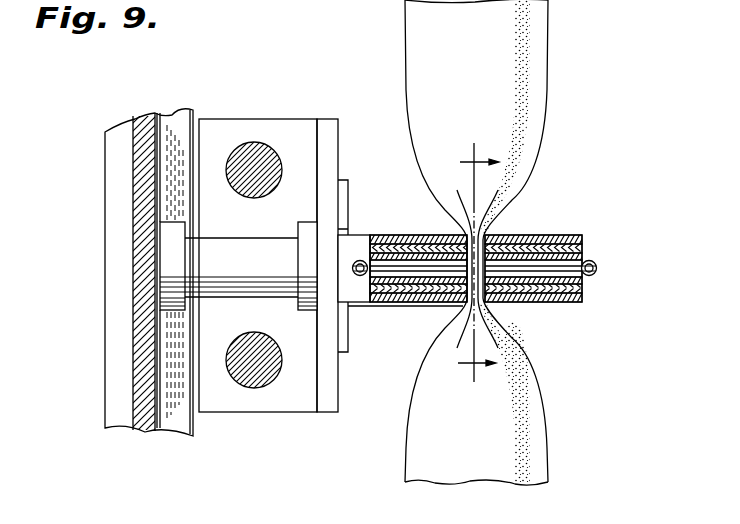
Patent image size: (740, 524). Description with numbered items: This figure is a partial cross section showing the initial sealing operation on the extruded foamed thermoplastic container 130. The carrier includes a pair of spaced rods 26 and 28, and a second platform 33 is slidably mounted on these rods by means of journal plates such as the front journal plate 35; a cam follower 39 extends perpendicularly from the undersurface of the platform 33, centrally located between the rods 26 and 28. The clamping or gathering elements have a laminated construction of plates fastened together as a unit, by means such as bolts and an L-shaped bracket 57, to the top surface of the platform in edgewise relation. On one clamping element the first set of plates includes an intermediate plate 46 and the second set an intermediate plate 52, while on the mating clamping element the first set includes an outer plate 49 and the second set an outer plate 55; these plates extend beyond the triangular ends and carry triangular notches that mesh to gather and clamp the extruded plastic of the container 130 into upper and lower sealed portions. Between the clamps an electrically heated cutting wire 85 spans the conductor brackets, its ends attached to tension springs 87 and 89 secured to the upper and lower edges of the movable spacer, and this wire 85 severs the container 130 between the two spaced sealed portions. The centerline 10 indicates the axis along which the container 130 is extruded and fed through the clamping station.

The centerline / strip feed direction 10 is at (476, 262).
The rod 26 is at (265, 158).
The rod 28 is at (253, 388).
The second platform 33 is at (334, 404).
The front journal plate 35 is at (238, 125).
The cam follower 39 is at (168, 250).
The intermediate plate 46 is at (577, 251).
The outer plate 49 is at (527, 239).
The intermediate plate 52 is at (577, 290).
The outer plate 55 is at (562, 297).
The L-shaped bracket 57 is at (341, 309).
The electrically heated cutting wire 85 is at (410, 266).
The tension spring 87 is at (357, 259).
The tension spring 89 is at (597, 267).
The container 130 is at (483, 104).